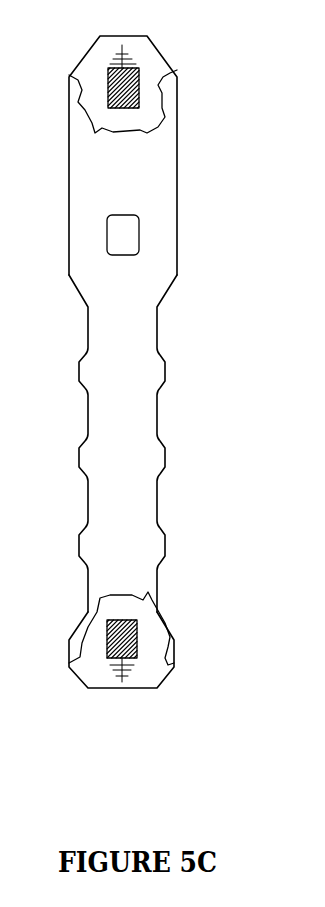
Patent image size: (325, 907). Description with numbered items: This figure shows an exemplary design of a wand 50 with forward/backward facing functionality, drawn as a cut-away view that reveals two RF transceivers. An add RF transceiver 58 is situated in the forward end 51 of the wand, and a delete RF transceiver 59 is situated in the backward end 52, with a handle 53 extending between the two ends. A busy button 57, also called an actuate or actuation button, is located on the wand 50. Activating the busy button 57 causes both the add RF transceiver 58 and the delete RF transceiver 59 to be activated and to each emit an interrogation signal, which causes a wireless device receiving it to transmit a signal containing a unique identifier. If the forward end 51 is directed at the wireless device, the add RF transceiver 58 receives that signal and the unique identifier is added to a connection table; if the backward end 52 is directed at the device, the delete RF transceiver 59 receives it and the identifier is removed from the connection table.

The wand 50 is at (163, 370).
The forward end 51 is at (177, 92).
The backward end 52 is at (174, 643).
The handle 53 is at (143, 477).
The busy button 57 is at (132, 228).
The add RF transceiver 58 is at (133, 73).
The delete RF transceiver 59 is at (112, 643).